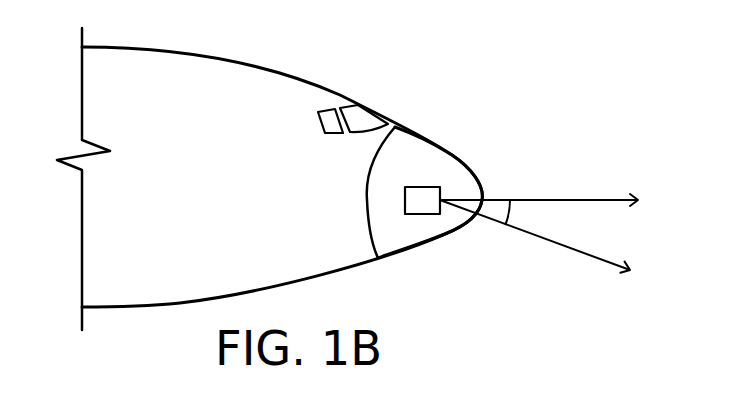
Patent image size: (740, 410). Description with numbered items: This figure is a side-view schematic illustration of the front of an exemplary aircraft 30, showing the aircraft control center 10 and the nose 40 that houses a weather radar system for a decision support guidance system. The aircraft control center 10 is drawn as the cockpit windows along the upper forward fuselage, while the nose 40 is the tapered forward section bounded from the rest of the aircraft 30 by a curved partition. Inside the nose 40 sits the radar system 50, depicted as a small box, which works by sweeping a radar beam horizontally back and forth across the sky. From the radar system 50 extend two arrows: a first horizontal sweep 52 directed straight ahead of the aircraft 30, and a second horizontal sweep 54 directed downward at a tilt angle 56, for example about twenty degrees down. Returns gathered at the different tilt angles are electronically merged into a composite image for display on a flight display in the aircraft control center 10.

The aircraft control center 10 is at (365, 122).
The aircraft 30 is at (152, 63).
The nose 40 is at (428, 167).
The radar system 50 is at (422, 207).
The first horizontal sweep 52 is at (602, 198).
The second horizontal sweep 54 is at (548, 242).
The tilt angle 56 is at (512, 205).